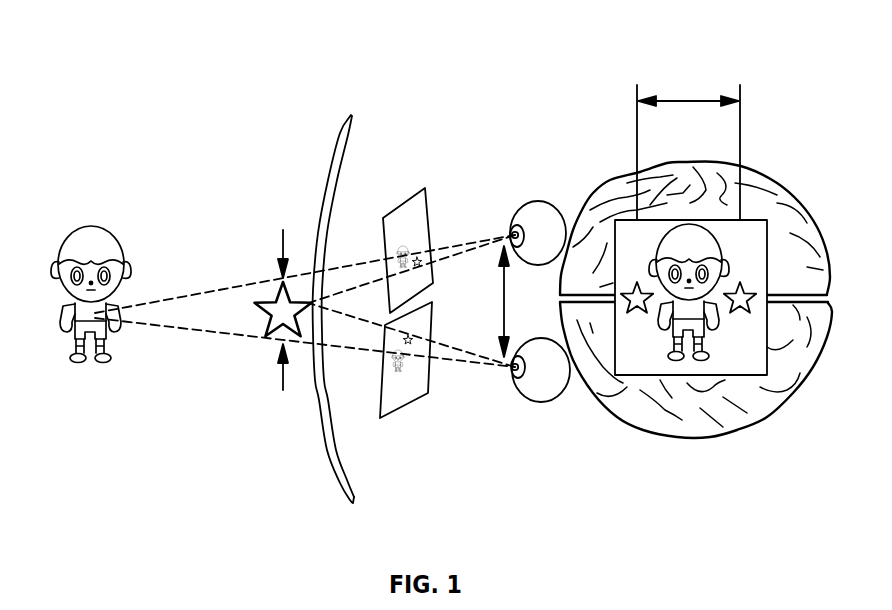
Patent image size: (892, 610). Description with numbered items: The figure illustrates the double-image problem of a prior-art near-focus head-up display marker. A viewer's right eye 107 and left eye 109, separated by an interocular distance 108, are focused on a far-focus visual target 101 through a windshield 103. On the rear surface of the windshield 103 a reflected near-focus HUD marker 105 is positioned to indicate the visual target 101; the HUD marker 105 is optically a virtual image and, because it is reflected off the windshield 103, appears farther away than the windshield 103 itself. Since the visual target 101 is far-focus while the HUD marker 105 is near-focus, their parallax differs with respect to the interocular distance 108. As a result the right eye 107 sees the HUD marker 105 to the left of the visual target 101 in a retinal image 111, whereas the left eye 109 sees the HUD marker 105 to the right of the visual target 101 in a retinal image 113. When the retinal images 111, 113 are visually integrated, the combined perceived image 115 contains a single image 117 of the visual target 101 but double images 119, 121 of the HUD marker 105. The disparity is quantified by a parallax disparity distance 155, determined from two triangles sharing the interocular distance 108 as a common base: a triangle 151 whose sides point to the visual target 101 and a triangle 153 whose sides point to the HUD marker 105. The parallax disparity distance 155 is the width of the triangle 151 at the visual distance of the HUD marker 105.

The visual target 101 is at (80, 235).
The windshield 103 is at (317, 215).
The HUD marker 105 is at (263, 323).
The right eye 107 is at (530, 203).
The interocular distance 108 is at (503, 303).
The left eye 109 is at (540, 402).
The retinal image 111 is at (410, 212).
The retinal image 113 is at (403, 408).
The combined perceived image 115 is at (715, 243).
The single image 117 is at (720, 220).
The double image 119 is at (637, 300).
The double image 121 is at (740, 300).
The triangle 151 is at (195, 293).
The triangle 153 is at (358, 328).
The parallax disparity distance 155 is at (283, 380).